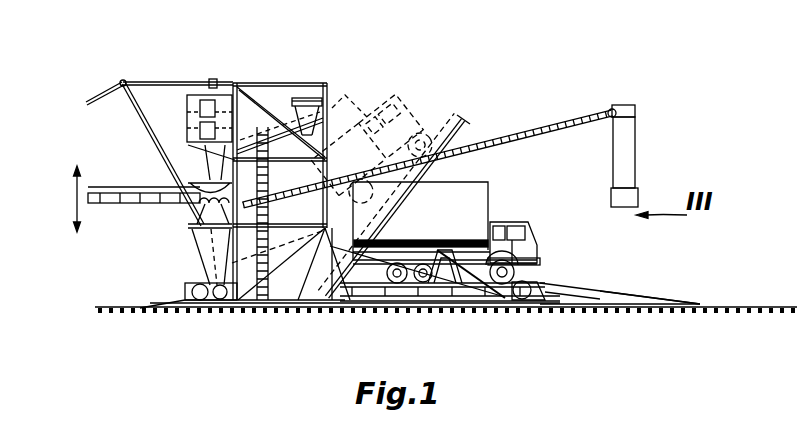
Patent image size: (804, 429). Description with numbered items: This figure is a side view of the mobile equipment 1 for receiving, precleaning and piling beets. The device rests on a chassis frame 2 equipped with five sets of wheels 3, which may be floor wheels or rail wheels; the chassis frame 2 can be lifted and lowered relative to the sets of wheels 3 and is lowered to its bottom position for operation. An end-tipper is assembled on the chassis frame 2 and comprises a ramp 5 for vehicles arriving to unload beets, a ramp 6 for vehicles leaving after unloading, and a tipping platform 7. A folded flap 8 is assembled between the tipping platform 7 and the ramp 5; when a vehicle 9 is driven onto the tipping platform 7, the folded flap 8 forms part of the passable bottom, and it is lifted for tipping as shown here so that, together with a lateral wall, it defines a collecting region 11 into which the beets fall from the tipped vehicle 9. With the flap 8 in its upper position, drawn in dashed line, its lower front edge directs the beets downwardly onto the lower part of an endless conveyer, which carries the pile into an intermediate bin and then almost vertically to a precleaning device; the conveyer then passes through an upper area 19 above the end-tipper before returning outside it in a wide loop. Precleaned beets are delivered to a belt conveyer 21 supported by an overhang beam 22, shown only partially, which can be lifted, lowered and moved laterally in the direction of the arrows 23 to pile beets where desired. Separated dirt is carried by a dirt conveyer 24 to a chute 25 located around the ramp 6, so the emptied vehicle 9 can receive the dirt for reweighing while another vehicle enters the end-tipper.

The mobile equipment 1 is at (305, 60).
The chassis frame 2 is at (562, 295).
The sets of wheels 3 is at (192, 308).
The ramp 5 is at (165, 308).
The ramp 6 is at (600, 293).
The tipping platform 7 is at (437, 181).
The folded flap 8 is at (250, 308).
The vehicle 9 is at (356, 140).
The collecting region 11 is at (290, 308).
The upper area 19 is at (313, 100).
The belt conveyer 21 is at (144, 167).
The overhang beam 22 is at (163, 204).
The arrows 23 is at (75, 210).
The dirt conveyer 24 is at (573, 113).
The chute 25 is at (628, 178).